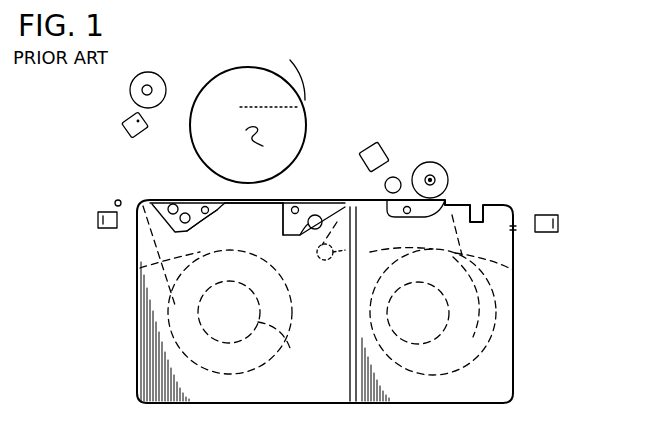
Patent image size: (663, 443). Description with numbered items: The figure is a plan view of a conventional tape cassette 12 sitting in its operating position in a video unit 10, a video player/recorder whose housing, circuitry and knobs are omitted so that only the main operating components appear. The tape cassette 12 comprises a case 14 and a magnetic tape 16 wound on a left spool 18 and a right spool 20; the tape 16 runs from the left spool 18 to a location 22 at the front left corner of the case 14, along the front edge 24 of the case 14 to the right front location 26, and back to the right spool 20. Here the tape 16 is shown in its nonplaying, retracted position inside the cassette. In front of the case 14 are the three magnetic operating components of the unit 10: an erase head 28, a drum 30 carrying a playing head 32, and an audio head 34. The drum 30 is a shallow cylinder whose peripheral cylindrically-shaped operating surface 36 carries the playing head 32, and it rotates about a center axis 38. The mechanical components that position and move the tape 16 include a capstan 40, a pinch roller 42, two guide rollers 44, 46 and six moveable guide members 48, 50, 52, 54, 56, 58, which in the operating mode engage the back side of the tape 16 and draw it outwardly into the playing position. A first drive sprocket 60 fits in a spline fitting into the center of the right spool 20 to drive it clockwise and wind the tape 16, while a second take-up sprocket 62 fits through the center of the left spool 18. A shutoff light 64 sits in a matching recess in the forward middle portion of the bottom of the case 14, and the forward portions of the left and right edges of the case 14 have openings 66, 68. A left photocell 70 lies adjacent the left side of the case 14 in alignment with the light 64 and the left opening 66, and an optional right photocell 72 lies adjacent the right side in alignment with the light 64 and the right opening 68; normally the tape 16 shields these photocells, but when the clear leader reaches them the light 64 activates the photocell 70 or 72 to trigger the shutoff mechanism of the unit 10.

The video unit 10 is at (402, 71).
The tape cassette 12 is at (576, 305).
The case 14 is at (433, 400).
The magnetic tape 16 is at (313, 200).
The left spool 18 is at (290, 368).
The right spool 20 is at (445, 382).
The front left corner location 22 is at (150, 200).
The front edge of the case 24 is at (283, 205).
The right front location 26 is at (447, 203).
The erase head 28 is at (122, 124).
The drum 30 is at (250, 78).
The playing head 32 is at (280, 82).
The audio head 34 is at (380, 157).
The peripheral operating surface 36 is at (293, 90).
The center axis 38 is at (267, 139).
The capstan 40 is at (403, 207).
The pinch roller 42 is at (446, 175).
The guide roller 44 is at (400, 178).
The guide roller 46 is at (130, 90).
The moveable guide member 48 is at (115, 201).
The moveable guide member 50 is at (164, 202).
The moveable guide member 52 is at (187, 213).
The moveable guide member 54 is at (210, 213).
The moveable guide member 56 is at (283, 217).
The moveable guide member 58 is at (310, 253).
The first drive sprocket 60 is at (513, 335).
The second take-up sprocket 62 is at (287, 337).
The shutoff light 64 is at (358, 247).
The left opening 66 is at (135, 227).
The right opening 68 is at (517, 227).
The left photocell 70 is at (97, 220).
The right photocell 72 is at (558, 223).